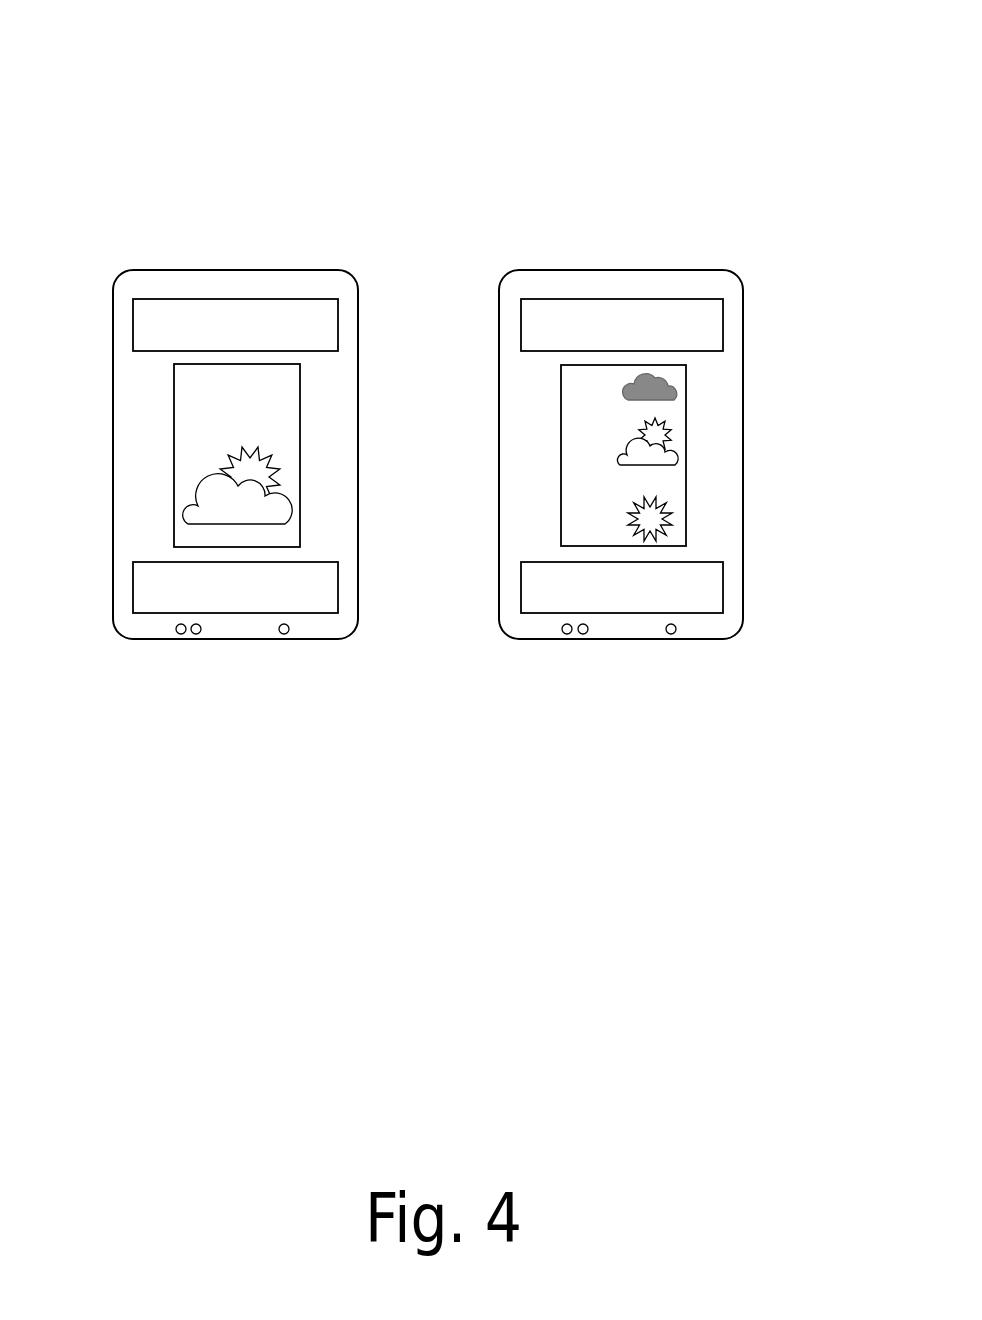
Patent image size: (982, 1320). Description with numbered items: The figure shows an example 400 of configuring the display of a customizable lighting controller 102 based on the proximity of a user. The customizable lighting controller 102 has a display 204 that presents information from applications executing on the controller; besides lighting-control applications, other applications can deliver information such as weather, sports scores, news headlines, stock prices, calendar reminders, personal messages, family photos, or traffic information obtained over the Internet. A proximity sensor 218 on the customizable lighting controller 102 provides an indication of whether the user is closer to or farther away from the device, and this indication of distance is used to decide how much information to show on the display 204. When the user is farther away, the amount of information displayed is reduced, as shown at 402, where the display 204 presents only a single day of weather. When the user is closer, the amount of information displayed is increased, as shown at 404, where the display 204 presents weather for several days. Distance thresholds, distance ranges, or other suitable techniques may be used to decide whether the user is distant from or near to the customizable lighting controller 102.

The example 400 is at (781, 63).
The customizable lighting controller 102 is at (308, 266).
The display 204 is at (170, 402).
The proximity sensor 218 is at (177, 642).
The reduced information display 402 is at (238, 692).
The increased information display 404 is at (626, 692).